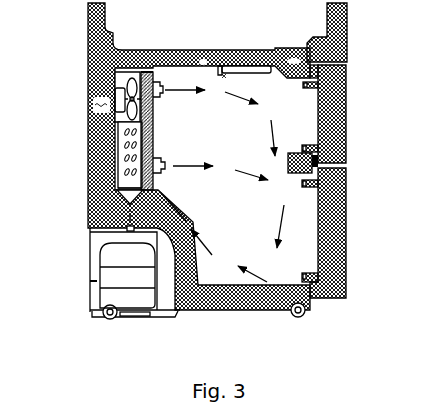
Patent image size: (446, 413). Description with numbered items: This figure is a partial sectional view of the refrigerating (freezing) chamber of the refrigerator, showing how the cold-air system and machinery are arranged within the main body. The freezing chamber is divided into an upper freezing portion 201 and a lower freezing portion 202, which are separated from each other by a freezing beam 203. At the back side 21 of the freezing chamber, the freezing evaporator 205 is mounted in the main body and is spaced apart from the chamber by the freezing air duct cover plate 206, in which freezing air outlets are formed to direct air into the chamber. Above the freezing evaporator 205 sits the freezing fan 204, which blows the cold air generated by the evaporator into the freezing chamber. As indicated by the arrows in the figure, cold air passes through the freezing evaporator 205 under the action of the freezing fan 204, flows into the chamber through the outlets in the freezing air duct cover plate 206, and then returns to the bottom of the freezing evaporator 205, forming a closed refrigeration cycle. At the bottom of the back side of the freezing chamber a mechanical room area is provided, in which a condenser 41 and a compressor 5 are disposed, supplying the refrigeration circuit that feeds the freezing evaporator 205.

The upper freezing portion 201 is at (345, 133).
The lower freezing portion 202 is at (337, 270).
The freezing beam 203 is at (345, 150).
The freezing fan 204 is at (112, 92).
The back side 21 is at (100, 120).
The freezing evaporator 205 is at (123, 155).
The freezing air duct cover plate 206 is at (123, 177).
The condenser 41 is at (98, 248).
The compressor 5 is at (98, 292).